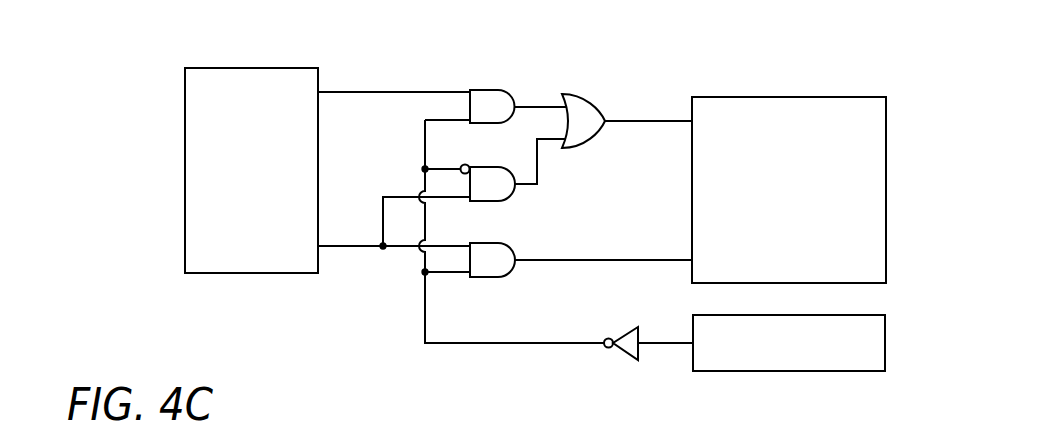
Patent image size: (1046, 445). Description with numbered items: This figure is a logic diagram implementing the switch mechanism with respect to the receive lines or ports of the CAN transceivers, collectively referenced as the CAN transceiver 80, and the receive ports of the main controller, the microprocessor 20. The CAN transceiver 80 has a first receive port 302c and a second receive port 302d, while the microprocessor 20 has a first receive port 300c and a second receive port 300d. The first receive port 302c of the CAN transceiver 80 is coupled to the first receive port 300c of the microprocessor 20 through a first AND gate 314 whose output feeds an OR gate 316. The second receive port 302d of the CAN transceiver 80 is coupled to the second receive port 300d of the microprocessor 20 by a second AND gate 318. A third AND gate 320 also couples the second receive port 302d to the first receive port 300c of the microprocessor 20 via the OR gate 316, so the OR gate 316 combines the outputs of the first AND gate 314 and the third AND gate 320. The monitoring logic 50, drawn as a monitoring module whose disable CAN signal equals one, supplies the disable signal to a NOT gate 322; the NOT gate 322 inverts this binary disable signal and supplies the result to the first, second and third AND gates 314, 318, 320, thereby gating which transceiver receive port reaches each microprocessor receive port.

The CAN transceiver 80 is at (185, 135).
The first receive port of the CAN transceiver 302c is at (283, 86).
The second receive port of the CAN transceiver 302d is at (303, 255).
The first AND gate 314 is at (482, 89).
The OR gate 316 is at (575, 93).
The third AND gate 320 is at (510, 200).
The second AND gate 318 is at (505, 278).
The NOT gate 322 is at (625, 353).
The microprocessor 20 is at (867, 97).
The first receive port of the microprocessor 300c is at (728, 108).
The second receive port of the microprocessor 300d is at (712, 250).
The monitoring logic 50 is at (872, 372).